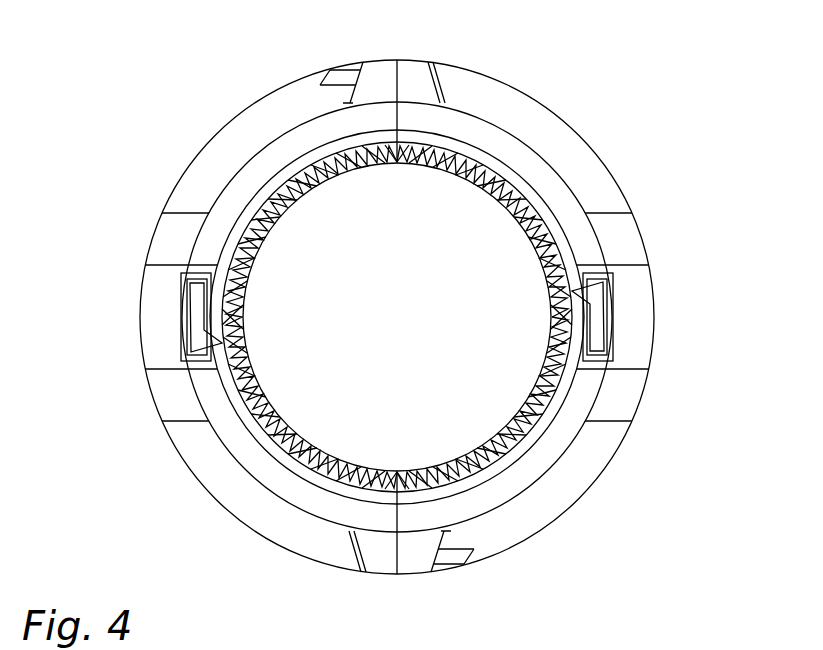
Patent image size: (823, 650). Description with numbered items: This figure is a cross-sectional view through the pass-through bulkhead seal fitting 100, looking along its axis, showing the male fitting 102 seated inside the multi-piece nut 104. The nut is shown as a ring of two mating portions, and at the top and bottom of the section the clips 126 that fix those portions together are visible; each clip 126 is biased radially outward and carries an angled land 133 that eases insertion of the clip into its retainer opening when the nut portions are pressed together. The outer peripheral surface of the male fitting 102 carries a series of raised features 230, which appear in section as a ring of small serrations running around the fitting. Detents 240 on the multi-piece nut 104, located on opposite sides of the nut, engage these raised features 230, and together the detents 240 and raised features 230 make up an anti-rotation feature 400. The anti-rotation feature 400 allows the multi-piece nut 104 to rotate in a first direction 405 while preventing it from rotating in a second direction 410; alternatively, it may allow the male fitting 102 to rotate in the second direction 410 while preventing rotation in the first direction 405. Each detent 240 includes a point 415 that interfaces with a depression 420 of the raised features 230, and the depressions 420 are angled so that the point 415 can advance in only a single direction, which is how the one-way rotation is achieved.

The pass-through bulkhead seal fitting 100 is at (654, 60).
The male fitting 102 is at (297, 197).
The multi-piece nut 104 is at (226, 126).
The clip 126 is at (343, 78).
The angled land 133 is at (330, 77).
The raised features 230 is at (236, 254).
The detents 240 is at (200, 340).
The anti-rotation feature 400 is at (262, 299).
The first direction 405 is at (185, 505).
The second direction 410 is at (606, 505).
The point 415 is at (224, 343).
The depression 420 is at (264, 414).